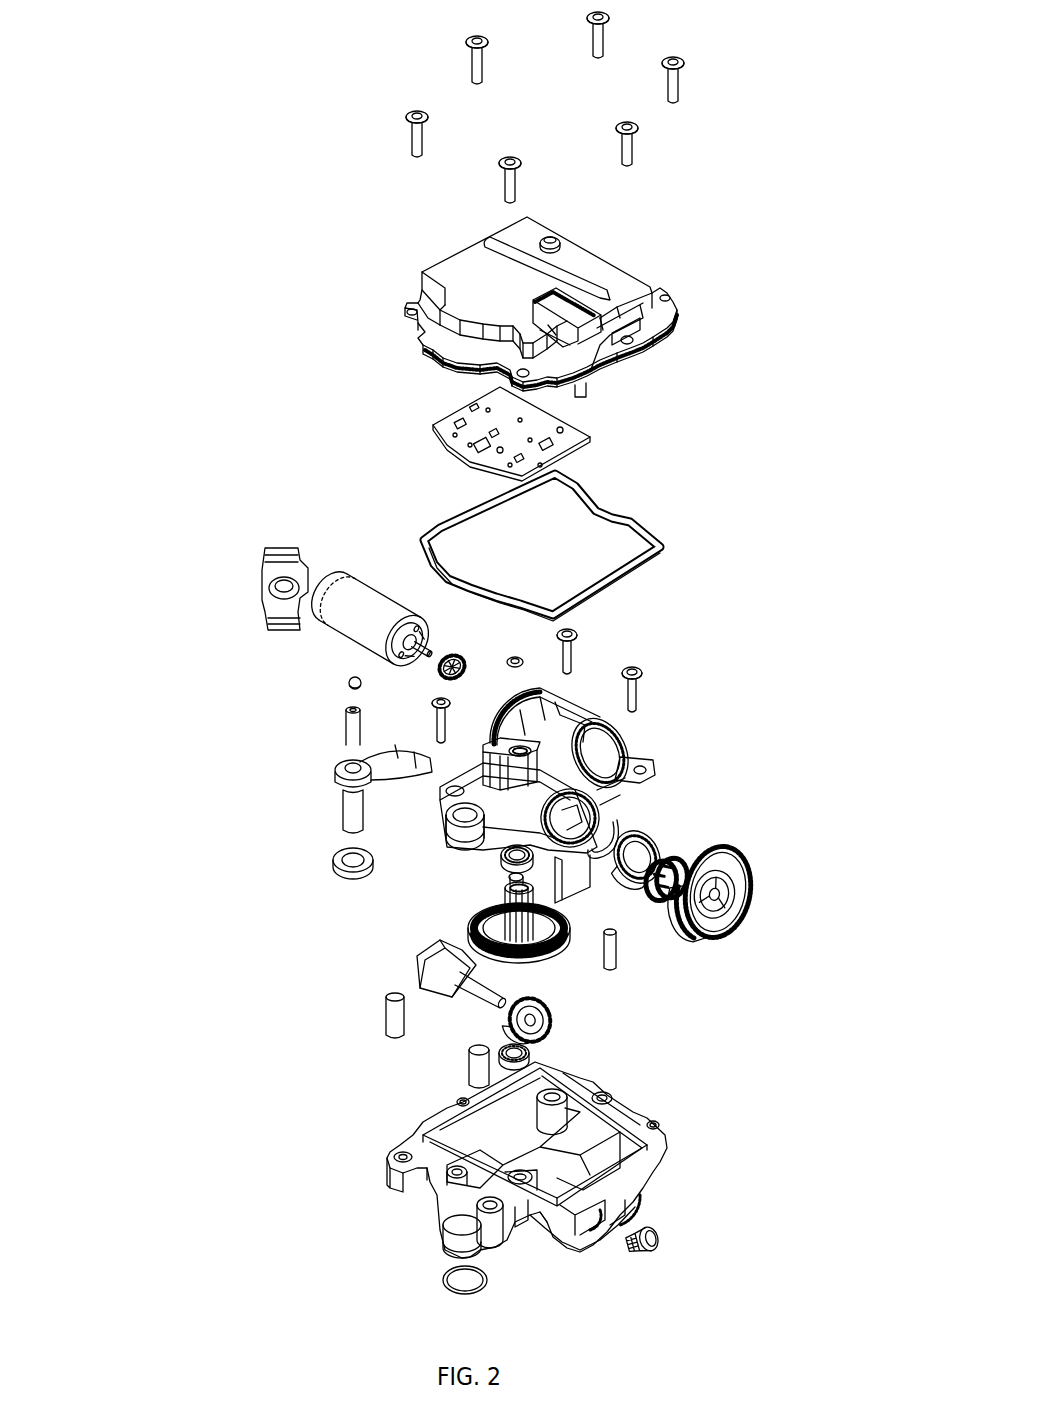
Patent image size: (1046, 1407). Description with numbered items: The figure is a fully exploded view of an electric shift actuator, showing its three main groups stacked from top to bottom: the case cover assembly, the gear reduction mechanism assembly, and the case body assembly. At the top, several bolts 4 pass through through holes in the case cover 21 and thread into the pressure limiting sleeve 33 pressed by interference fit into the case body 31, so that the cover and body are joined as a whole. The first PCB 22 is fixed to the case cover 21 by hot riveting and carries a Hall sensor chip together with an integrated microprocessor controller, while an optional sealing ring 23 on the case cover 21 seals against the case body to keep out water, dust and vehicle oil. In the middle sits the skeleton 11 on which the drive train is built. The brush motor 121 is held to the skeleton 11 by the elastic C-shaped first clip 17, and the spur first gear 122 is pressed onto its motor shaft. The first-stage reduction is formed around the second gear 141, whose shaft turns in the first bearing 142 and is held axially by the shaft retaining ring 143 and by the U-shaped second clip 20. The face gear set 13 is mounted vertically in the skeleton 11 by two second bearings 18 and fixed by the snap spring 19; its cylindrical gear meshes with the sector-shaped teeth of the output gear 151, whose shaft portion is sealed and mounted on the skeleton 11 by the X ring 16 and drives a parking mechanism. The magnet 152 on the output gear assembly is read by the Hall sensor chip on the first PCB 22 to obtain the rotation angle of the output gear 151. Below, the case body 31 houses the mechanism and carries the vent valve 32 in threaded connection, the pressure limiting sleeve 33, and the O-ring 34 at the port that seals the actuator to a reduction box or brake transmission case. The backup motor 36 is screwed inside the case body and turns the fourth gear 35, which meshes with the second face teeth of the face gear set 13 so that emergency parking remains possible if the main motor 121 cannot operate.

The bolts 4 is at (636, 147).
The case cover 21 is at (663, 290).
The first PCB 22 is at (590, 437).
The sealing ring 23 is at (645, 525).
The first clip 17 is at (263, 574).
The motor 121 is at (322, 628).
The first gear 122 is at (440, 665).
The magnet 152 is at (348, 682).
The output gear 151 is at (336, 764).
The second clip 20 is at (446, 845).
The X ring 16 is at (333, 856).
The snap spring 19 is at (523, 660).
The skeleton 11 is at (623, 738).
The shaft retaining ring 143 is at (617, 822).
The first bearing 142 is at (660, 846).
The second gear 141 is at (745, 860).
The face gear set 13 is at (467, 920).
The backup motor 36 is at (418, 955).
The fourth gear 35 is at (510, 1013).
The pressure limiting sleeve 33 is at (505, 1043).
The second bearing 18 is at (387, 1000).
The case body 31 is at (450, 1113).
The vent valve 32 is at (653, 1232).
The O-ring 34 is at (445, 1273).